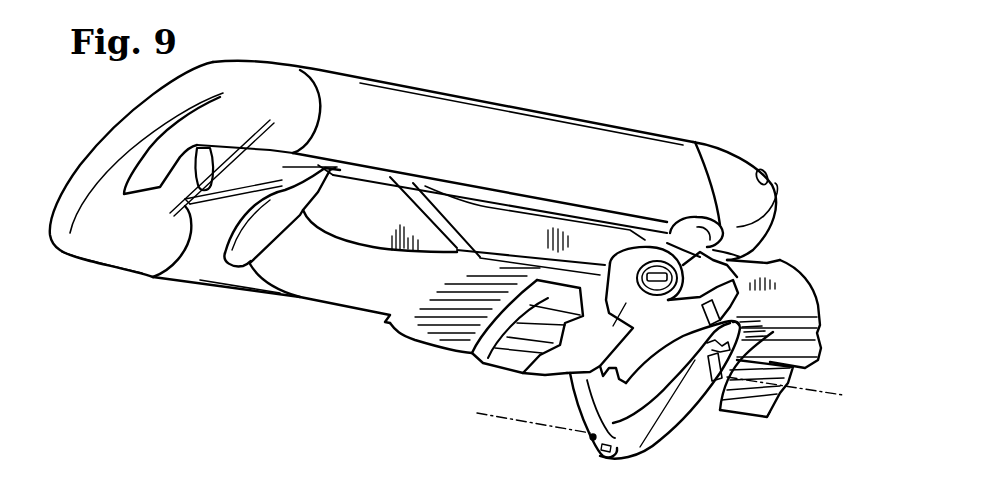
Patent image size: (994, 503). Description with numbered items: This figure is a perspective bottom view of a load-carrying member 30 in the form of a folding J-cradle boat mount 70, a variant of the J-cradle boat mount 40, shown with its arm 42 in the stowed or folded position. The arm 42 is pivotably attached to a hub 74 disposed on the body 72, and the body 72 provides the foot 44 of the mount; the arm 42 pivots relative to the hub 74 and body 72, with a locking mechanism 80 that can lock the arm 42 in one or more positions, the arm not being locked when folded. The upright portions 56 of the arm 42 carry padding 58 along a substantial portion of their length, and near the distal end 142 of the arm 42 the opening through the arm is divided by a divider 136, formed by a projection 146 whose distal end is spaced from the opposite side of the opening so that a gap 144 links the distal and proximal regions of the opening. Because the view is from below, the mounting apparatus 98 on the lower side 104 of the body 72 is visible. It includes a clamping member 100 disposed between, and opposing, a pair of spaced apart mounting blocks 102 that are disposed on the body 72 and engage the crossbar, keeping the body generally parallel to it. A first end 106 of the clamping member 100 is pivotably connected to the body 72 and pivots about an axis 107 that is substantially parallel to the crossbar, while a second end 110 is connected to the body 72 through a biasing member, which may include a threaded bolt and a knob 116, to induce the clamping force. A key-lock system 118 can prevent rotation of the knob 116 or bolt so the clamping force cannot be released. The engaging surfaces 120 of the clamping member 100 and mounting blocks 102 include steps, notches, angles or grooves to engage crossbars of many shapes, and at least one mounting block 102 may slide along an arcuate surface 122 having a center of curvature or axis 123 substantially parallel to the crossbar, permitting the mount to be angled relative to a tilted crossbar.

The load-carrying member 30 is at (84, 348).
The J-cradle boat mount 40 is at (109, 316).
The arm 42 is at (468, 110).
The foot 44 is at (412, 354).
The upright portions 56 is at (547, 128).
The padding 58 is at (630, 138).
The folding J-cradle boat mount 70 is at (124, 283).
The body 72 is at (303, 283).
The hub 74 is at (774, 162).
The locking mechanism 80 is at (780, 229).
The mounting apparatus 98 is at (744, 467).
The clamping member 100 is at (633, 447).
The mounting blocks 102 is at (543, 373).
The lower side 104 is at (372, 332).
The first end 106 is at (596, 450).
The axis 107 is at (513, 423).
The second end 110 is at (742, 319).
The knob 116 is at (695, 217).
The key-lock system 118 is at (655, 287).
The engaging surfaces 120 is at (517, 350).
The arcuate surface 122 is at (523, 305).
The axis 123 is at (807, 393).
The divider 136 is at (245, 147).
The distal end 142 is at (99, 134).
The gap 144 is at (191, 155).
The projection 146 is at (250, 188).